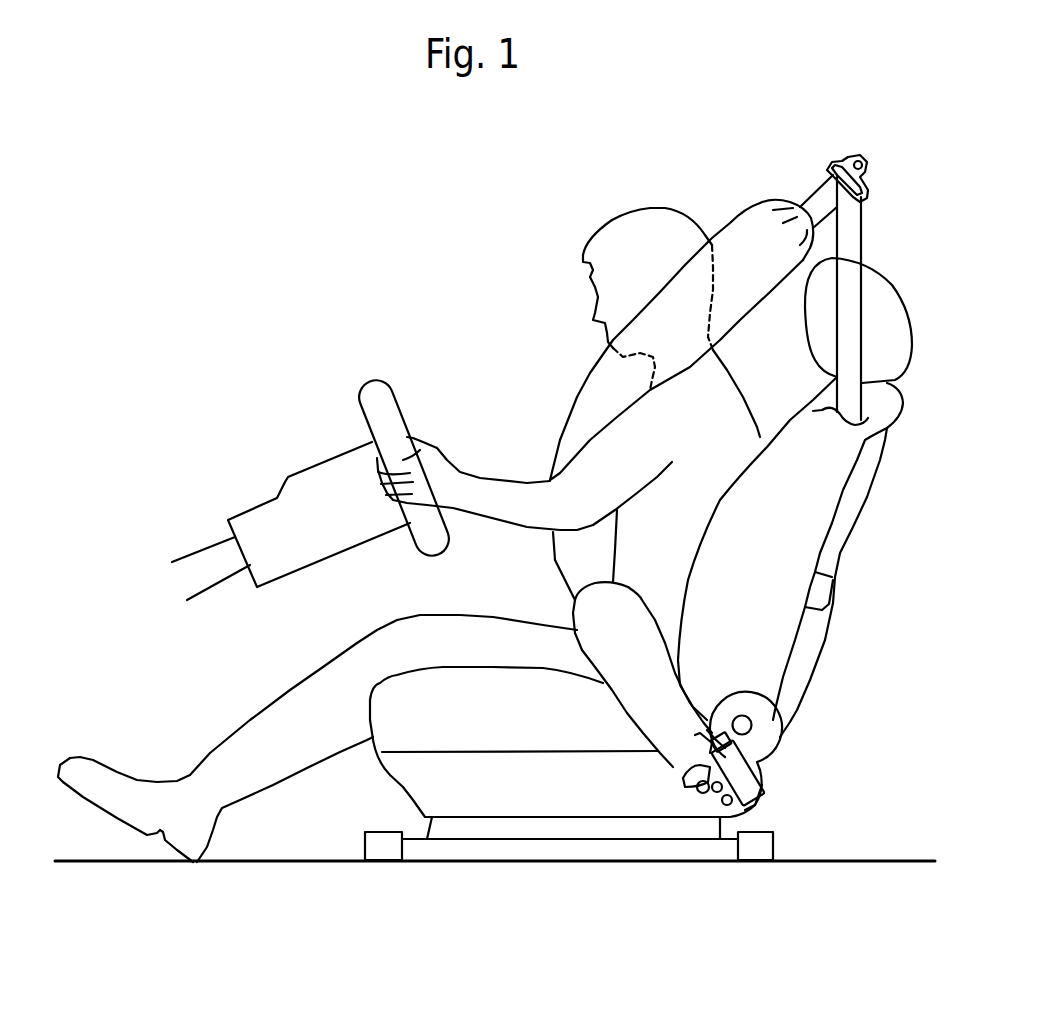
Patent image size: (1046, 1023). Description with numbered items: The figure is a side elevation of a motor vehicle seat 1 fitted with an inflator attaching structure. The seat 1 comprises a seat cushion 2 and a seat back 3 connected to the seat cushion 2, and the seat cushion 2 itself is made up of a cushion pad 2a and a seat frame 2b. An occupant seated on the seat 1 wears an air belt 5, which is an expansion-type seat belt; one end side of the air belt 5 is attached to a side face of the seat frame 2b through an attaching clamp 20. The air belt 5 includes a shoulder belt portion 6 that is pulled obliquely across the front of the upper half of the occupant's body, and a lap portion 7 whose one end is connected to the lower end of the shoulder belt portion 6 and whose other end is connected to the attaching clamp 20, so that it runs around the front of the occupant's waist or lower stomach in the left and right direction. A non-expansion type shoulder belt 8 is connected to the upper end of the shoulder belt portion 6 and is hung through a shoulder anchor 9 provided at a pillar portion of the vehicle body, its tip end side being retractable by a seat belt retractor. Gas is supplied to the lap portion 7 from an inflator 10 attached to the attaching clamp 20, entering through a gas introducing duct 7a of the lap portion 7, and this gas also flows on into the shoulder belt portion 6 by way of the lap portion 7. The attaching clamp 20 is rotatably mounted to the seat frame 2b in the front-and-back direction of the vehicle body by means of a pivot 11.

The seat 1 is at (885, 516).
The seat cushion 2 is at (360, 786).
The cushion pad 2a is at (443, 683).
The seat frame 2b is at (477, 763).
The seat back 3 is at (778, 640).
The air belt 5 is at (558, 597).
The shoulder belt portion 6 is at (578, 411).
The lap portion 7 is at (598, 658).
The gas introducing duct 7a is at (707, 730).
The shoulder belt 8 is at (815, 195).
The shoulder anchor 9 is at (877, 190).
The inflator 10 is at (760, 813).
The pivot 11 is at (690, 790).
The attaching clamp 20 is at (700, 807).